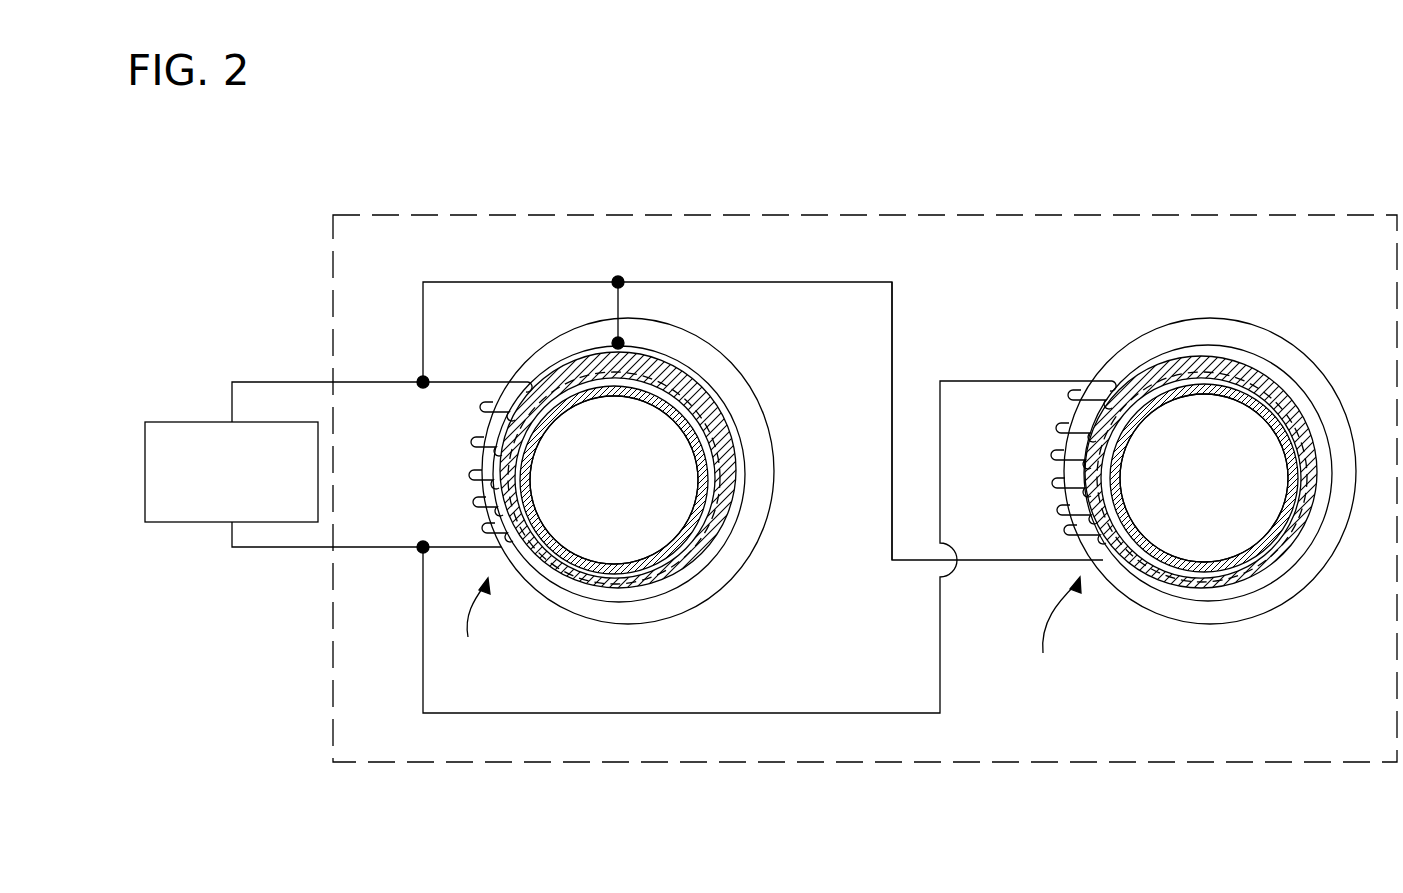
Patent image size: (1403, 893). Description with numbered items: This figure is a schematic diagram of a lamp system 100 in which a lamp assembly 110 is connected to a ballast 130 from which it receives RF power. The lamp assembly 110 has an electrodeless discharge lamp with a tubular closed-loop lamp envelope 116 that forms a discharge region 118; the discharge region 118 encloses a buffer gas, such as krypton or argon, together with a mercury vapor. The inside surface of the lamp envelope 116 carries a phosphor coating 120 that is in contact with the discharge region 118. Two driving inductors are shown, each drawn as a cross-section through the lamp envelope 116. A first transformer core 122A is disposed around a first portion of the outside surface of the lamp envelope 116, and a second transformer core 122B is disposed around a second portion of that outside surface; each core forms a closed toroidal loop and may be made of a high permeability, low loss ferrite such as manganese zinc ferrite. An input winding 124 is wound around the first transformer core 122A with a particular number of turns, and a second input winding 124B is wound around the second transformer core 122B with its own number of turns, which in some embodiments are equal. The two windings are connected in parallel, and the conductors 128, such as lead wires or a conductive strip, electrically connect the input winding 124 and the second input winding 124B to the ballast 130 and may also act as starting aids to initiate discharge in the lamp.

The lamp system 100 is at (482, 120).
The lamp assembly 110 is at (1230, 213).
The lamp envelope 116 is at (690, 572).
The discharge region 118 is at (657, 455).
The phosphor coating 120 is at (608, 548).
The first transformer core 122A is at (757, 468).
The second transformer core 122B is at (1195, 615).
The input winding 124 is at (463, 503).
The second input winding 124B is at (1047, 517).
The conductors 128 is at (895, 298).
The ballast 130 is at (190, 422).